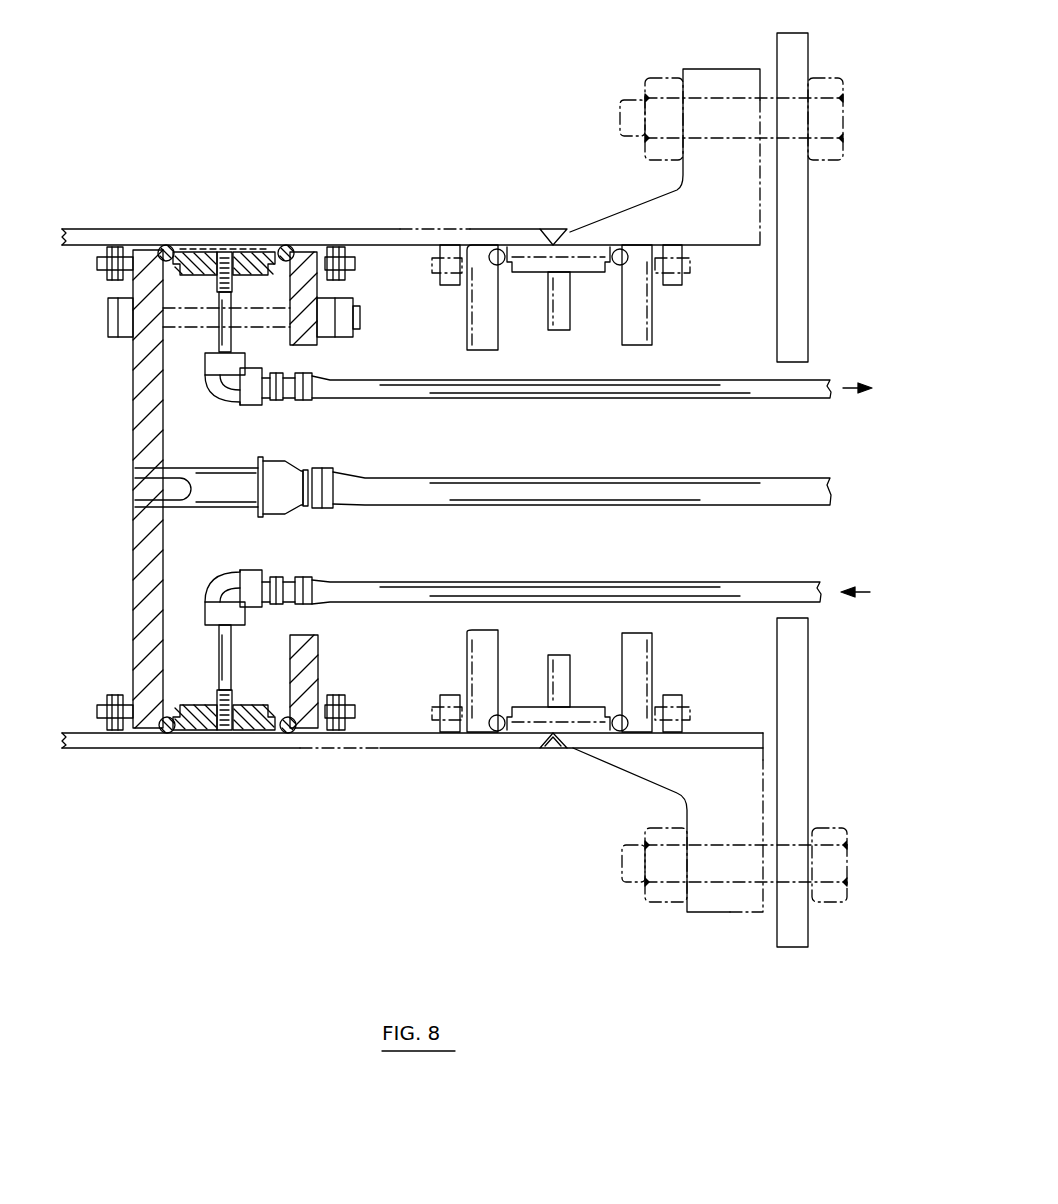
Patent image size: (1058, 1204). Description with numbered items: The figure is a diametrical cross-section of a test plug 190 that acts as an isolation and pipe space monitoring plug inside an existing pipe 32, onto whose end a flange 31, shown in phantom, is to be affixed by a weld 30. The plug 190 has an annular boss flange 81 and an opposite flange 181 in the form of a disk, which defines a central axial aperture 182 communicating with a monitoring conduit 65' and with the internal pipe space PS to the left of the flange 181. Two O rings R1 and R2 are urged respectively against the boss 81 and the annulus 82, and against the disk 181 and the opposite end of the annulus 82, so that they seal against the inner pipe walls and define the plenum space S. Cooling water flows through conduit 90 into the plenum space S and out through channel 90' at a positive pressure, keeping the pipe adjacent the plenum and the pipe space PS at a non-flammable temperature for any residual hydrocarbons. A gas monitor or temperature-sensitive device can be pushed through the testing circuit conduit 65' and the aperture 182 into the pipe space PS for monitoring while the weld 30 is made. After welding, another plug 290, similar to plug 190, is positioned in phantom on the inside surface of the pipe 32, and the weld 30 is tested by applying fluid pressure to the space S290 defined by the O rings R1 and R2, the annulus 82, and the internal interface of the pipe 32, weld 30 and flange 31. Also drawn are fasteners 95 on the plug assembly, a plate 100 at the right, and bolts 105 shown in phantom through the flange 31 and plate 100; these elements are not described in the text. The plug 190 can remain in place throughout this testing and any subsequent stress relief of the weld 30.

The pipe 32 is at (85, 750).
The space S290 is at (573, 250).
The flange 31 is at (717, 912).
The support plate 100 is at (800, 787).
The bolt 105 is at (825, 85).
The flange 181 is at (133, 402).
The bolt 95 is at (102, 266).
The annulus 82 is at (266, 250).
The O ring R2 is at (165, 247).
The O ring R1 is at (291, 247).
The plenum space S is at (225, 250).
The test plug 190 is at (298, 273).
The annular boss flange 81 is at (320, 316).
The channel 90' is at (518, 378).
The conduit 90 is at (513, 581).
The central axial aperture 182 is at (170, 482).
The monitoring conduit 65' is at (582, 464).
The plug 290 is at (643, 324).
The weld 30 is at (552, 740).
The pipe space PS is at (82, 552).